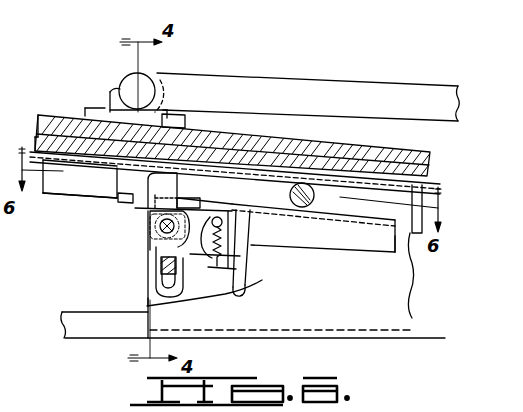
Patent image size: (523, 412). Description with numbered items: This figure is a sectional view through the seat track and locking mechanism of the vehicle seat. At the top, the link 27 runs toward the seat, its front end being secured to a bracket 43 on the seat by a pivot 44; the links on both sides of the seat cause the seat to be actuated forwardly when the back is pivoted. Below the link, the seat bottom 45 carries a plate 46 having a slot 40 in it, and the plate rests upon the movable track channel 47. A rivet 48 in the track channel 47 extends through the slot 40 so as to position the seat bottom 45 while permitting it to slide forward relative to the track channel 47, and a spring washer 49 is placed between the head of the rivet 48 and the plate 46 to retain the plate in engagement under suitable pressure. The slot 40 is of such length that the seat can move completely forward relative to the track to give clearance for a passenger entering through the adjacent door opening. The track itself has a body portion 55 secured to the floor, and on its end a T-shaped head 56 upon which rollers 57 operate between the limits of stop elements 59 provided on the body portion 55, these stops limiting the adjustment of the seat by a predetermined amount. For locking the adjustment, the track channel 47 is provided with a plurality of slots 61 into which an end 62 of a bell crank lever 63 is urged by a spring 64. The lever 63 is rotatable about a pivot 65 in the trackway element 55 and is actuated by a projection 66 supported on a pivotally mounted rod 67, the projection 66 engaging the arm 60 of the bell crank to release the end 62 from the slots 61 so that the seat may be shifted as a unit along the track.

The link 27 is at (271, 75).
The slot 40 is at (427, 174).
The bracket 43 is at (110, 95).
The pivot 44 is at (147, 88).
The seat bottom 45 is at (66, 119).
The plate 46 is at (227, 182).
The track channel 47 is at (84, 202).
The rivet 48 is at (107, 170).
The spring washer 49 is at (175, 118).
The body portion 55 is at (409, 270).
The T-shaped head 56 is at (354, 244).
The rollers 57 is at (297, 220).
The stop elements 59 is at (148, 186).
The arms 60 is at (146, 272).
The slots 61 is at (266, 218).
The end 62 is at (242, 292).
The bell crank lever 63 is at (182, 254).
The spring 64 is at (220, 204).
The pivot 65 is at (160, 218).
The projection 66 is at (156, 302).
The rod 67 is at (119, 318).